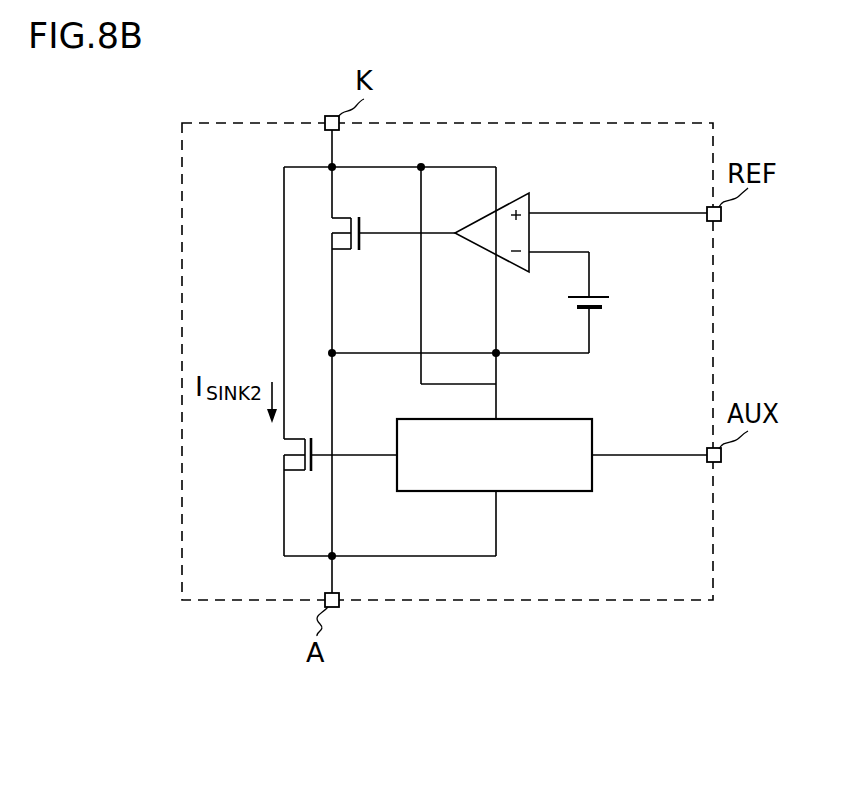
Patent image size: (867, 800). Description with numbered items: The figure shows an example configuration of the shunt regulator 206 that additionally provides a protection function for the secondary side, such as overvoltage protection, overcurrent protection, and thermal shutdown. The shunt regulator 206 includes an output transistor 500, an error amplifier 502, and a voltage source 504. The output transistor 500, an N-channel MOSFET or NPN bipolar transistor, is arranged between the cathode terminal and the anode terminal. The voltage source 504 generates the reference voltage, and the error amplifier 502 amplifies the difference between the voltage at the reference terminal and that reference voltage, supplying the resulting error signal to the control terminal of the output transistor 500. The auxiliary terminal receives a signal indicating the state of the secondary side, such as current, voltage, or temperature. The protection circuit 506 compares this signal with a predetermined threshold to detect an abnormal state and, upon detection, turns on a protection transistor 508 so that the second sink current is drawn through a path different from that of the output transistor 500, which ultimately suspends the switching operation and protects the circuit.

The shunt regulator 206 is at (570, 603).
The output transistor 500 is at (357, 255).
The error amplifier 502 is at (474, 253).
The voltage source 504 is at (613, 302).
The protection circuit 506 is at (592, 472).
The protection transistor 508 is at (272, 458).